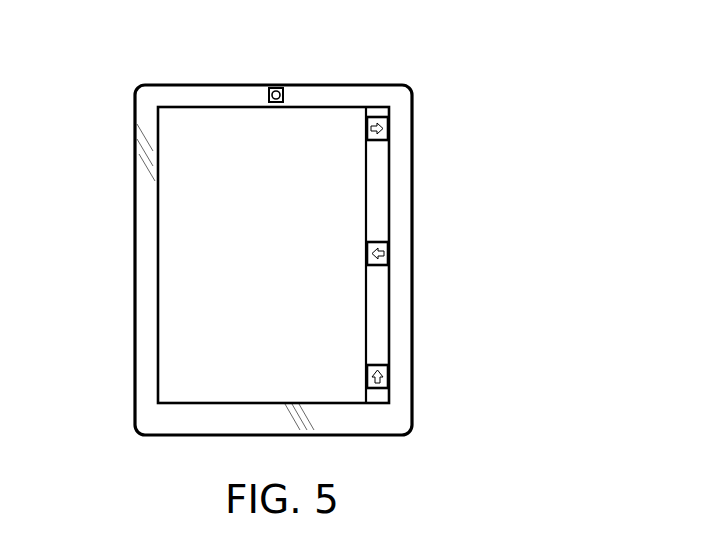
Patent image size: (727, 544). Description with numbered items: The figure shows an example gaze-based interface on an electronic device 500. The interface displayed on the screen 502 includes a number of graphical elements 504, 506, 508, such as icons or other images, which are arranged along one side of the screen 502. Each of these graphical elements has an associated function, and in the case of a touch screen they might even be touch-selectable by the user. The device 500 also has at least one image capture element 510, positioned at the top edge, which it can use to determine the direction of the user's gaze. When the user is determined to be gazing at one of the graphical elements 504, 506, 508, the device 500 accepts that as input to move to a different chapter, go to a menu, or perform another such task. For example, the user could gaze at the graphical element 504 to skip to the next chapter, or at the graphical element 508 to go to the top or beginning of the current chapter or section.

The device 500 is at (601, 87).
The screen 502 is at (157, 272).
The graphical element 504 is at (390, 130).
The graphical element 506 is at (390, 253).
The graphical element 508 is at (390, 378).
The image capture element 510 is at (272, 87).